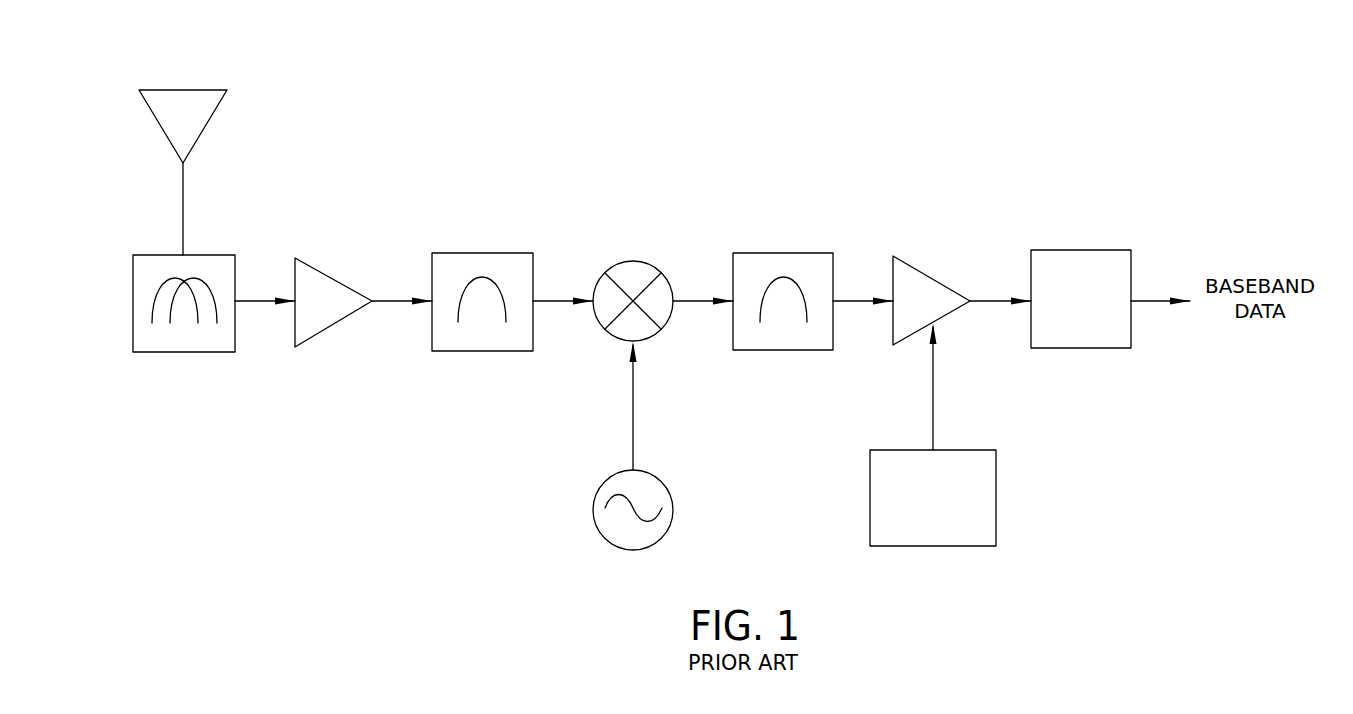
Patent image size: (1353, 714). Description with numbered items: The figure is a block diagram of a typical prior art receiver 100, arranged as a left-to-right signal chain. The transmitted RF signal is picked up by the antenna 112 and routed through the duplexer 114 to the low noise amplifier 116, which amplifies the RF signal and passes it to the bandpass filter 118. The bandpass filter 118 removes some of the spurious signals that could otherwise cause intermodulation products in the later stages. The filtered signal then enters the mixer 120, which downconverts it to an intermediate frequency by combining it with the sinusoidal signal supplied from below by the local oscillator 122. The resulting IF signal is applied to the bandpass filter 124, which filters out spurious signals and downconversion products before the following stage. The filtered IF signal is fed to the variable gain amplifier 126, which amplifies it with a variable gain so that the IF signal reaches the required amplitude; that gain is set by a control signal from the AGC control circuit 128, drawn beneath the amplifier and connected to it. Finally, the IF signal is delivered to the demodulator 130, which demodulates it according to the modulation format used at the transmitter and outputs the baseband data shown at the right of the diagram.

The receiver 100 is at (1130, 116).
The antenna 112 is at (198, 90).
The duplexer 114 is at (217, 255).
The low noise amplifier 116 is at (330, 278).
The bandpass filter 118 is at (481, 253).
The mixer 120 is at (633, 261).
The local oscillator 122 is at (658, 478).
The bandpass filter 124 is at (781, 253).
The variable gain amplifier 126 is at (928, 276).
The AGC control circuit 128 is at (970, 450).
The demodulator 130 is at (1080, 250).